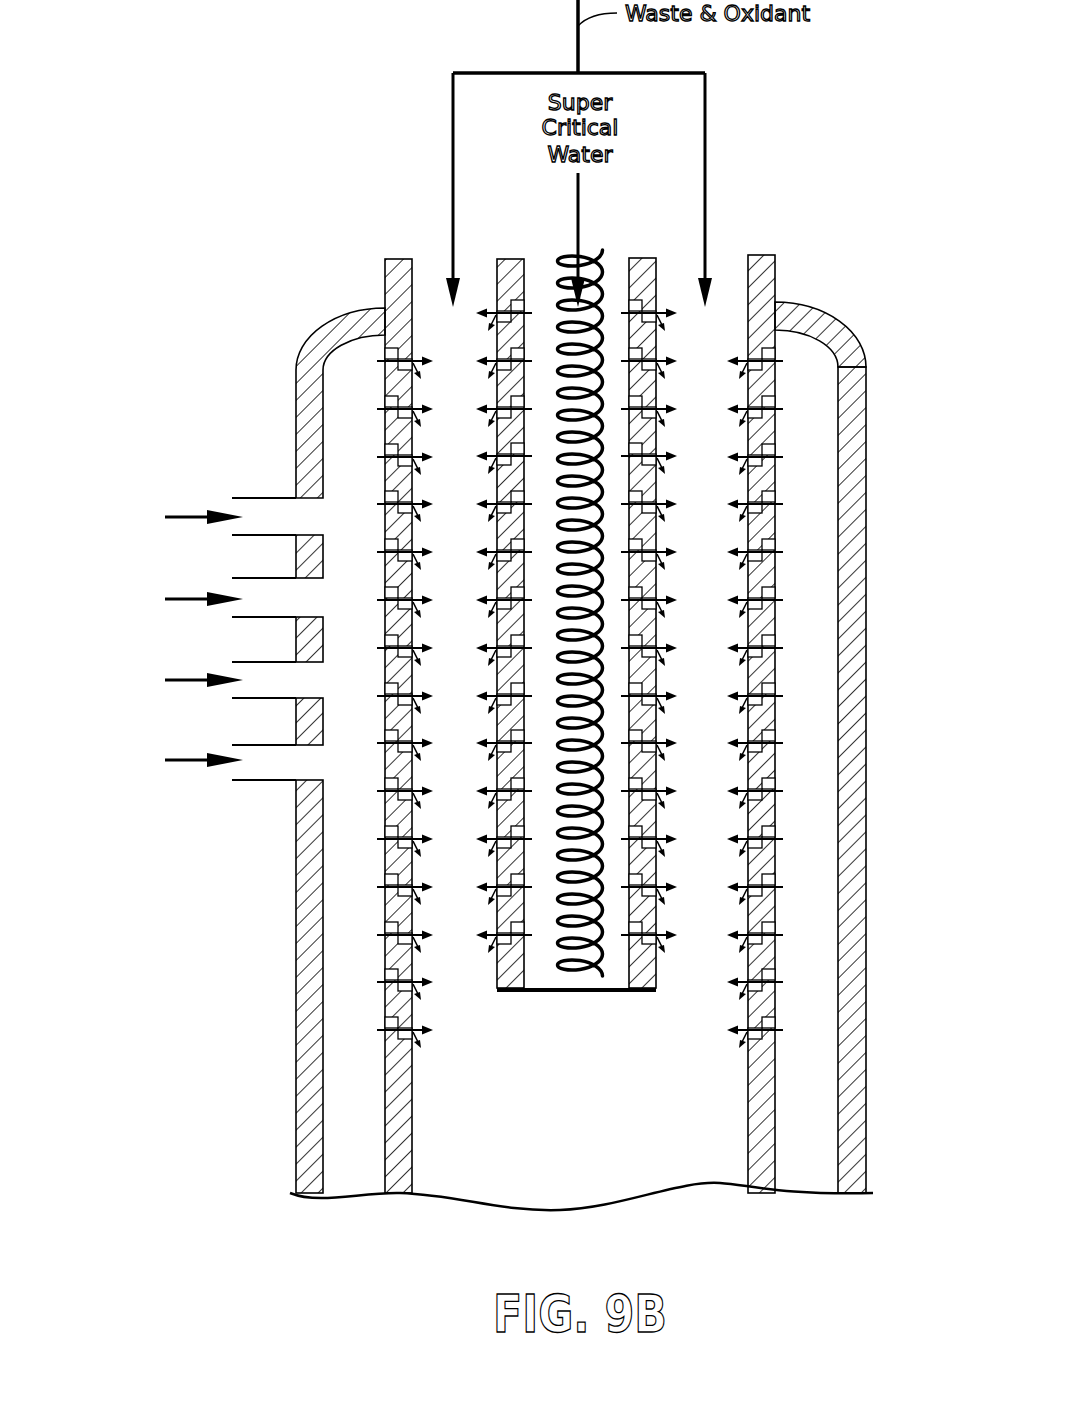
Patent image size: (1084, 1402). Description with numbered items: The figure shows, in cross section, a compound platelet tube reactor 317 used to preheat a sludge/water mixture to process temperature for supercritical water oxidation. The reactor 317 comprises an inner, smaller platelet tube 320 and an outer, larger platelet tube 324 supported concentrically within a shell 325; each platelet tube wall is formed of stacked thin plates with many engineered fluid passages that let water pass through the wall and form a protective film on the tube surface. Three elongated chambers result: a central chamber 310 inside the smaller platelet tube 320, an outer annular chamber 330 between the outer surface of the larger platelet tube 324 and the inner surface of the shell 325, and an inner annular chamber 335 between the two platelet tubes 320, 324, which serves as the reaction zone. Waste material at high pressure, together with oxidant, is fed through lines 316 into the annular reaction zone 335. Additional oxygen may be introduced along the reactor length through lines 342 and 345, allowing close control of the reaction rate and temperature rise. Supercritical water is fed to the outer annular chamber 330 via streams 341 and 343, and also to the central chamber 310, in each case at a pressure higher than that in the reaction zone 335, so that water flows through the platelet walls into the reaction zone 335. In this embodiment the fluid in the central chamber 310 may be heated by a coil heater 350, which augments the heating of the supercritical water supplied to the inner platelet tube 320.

The central chamber 310 is at (600, 638).
The lines 316 is at (452, 122).
The compound platelet tube reactor 317 is at (236, 331).
The inner platelet tube 320 is at (648, 257).
The outer platelet tube 324 is at (776, 763).
The shell 325 is at (856, 342).
The outer annular chamber 330 is at (823, 603).
The inner annular chamber 335 is at (473, 638).
The supercritical water stream 341 is at (189, 516).
The oxygen line 342 is at (190, 604).
The supercritical water stream 343 is at (189, 762).
The oxygen line 345 is at (178, 684).
The coil heater 350 is at (560, 254).